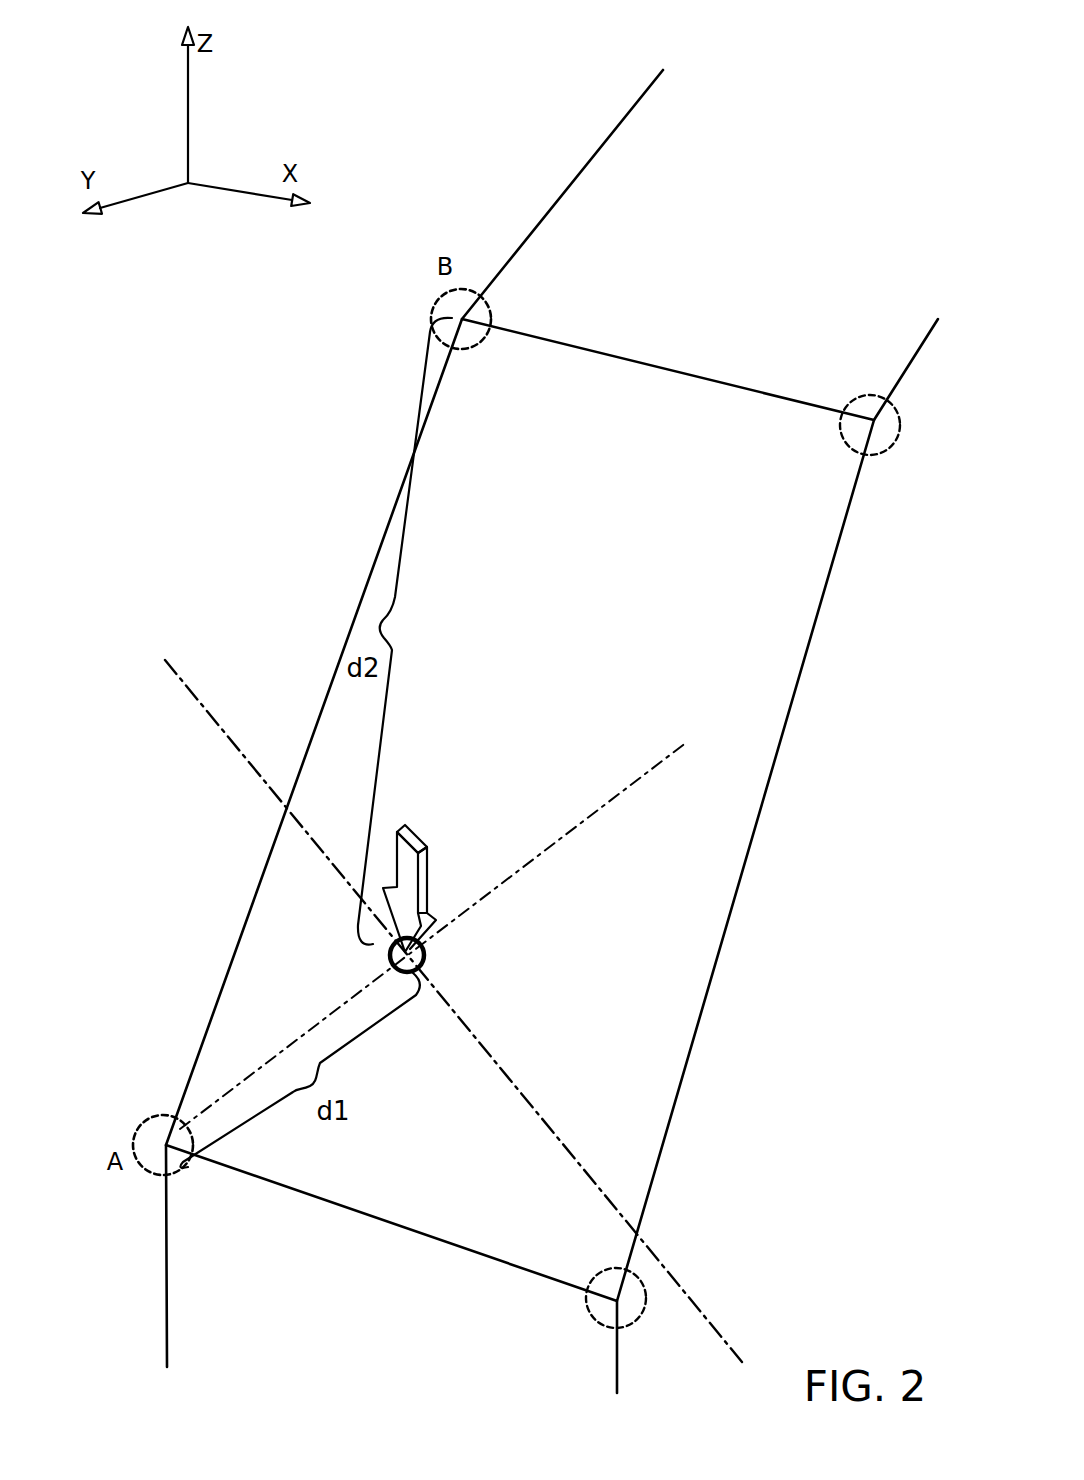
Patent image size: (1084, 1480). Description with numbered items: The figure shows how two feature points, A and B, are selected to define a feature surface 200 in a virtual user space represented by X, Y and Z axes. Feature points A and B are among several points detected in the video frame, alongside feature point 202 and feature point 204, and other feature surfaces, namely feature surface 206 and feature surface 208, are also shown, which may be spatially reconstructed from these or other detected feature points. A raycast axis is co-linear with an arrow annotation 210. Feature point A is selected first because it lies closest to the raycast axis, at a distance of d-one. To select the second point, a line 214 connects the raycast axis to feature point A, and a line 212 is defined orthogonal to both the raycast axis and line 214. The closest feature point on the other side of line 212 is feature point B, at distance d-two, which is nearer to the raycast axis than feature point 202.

The feature surface 200 is at (750, 648).
The feature point 202 is at (863, 397).
The feature point 204 is at (597, 1322).
The feature surface 206 is at (640, 188).
The feature surface 208 is at (218, 1310).
The arrow annotation 210 is at (420, 835).
The line 212 is at (488, 1052).
The line 214 is at (350, 998).